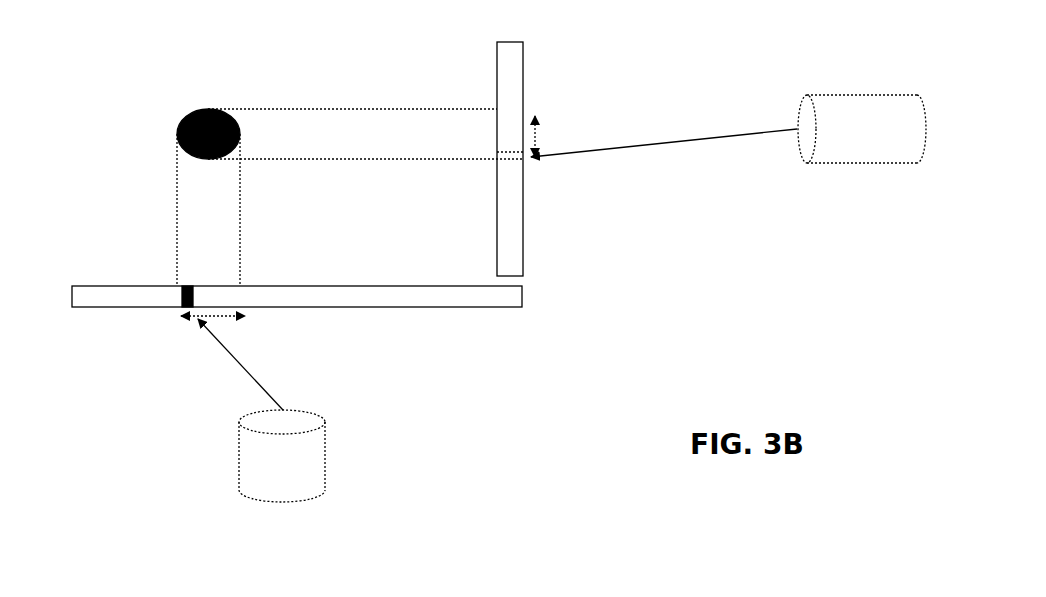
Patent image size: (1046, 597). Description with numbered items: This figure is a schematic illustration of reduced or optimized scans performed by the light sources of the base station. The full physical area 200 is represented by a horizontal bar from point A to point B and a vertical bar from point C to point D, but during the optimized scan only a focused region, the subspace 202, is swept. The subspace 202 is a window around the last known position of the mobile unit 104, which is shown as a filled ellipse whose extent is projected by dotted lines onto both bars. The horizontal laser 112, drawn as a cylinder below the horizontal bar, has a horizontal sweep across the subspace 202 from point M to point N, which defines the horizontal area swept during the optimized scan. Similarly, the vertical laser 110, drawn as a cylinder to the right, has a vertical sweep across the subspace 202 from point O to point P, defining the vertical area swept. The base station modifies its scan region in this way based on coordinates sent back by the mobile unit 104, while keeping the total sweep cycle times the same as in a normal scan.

The physical area 200 is at (188, 65).
The mobile unit 104 is at (182, 121).
The subspace 202 is at (314, 122).
The vertical laser 110 is at (863, 103).
The horizontal laser 112 is at (298, 476).